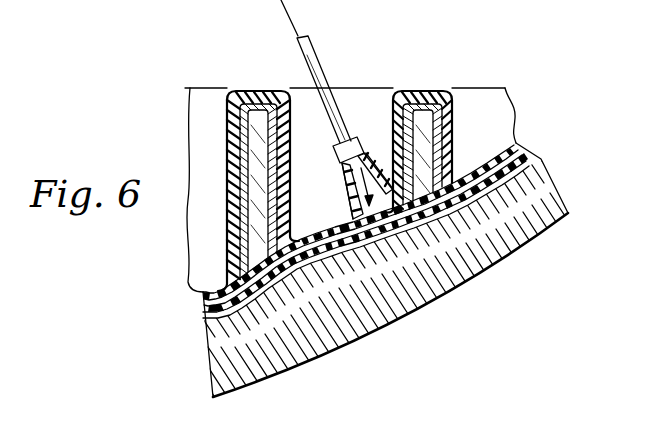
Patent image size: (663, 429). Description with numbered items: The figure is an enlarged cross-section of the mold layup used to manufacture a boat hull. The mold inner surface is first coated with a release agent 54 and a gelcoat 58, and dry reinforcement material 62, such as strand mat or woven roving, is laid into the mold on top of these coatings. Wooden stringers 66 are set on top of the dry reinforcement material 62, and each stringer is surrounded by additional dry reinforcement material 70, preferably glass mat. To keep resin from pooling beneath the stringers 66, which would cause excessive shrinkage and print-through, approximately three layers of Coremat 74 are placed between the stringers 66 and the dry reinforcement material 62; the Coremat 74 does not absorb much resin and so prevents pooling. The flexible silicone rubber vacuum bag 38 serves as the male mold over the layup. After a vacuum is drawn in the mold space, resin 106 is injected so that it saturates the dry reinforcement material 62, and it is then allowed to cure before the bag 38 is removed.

The vacuum bag 38 is at (201, 292).
The release agent 54 is at (316, 277).
The gelcoat 58 is at (210, 322).
The dry reinforcement material 62 is at (512, 144).
The wooden stringers 66 is at (258, 110).
The additional dry reinforcement material 70 is at (231, 95).
The Coremat 74 is at (416, 216).
The resin 106 is at (352, 172).